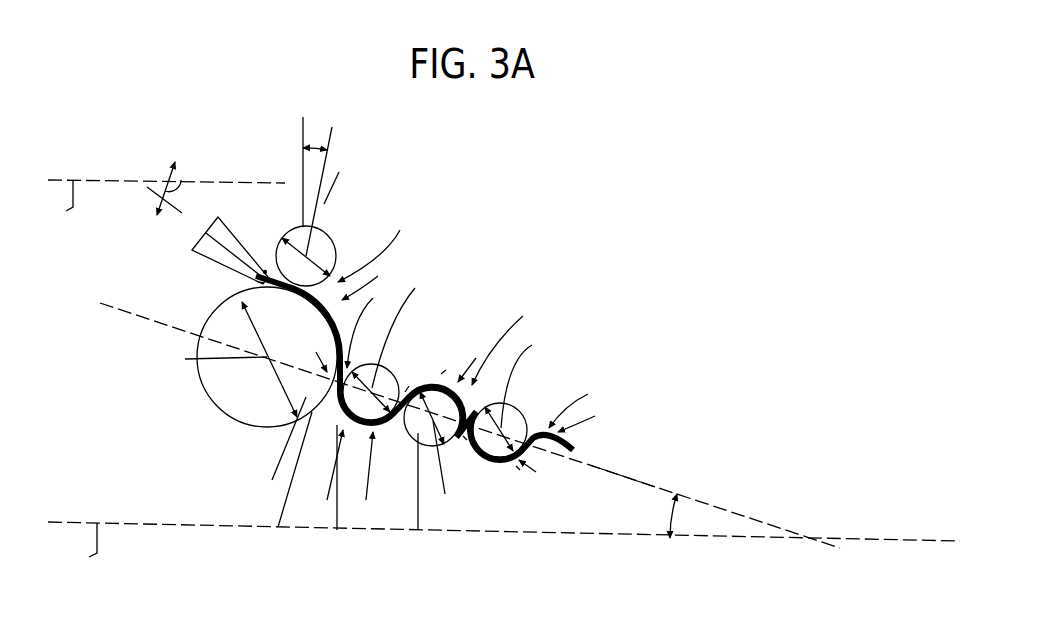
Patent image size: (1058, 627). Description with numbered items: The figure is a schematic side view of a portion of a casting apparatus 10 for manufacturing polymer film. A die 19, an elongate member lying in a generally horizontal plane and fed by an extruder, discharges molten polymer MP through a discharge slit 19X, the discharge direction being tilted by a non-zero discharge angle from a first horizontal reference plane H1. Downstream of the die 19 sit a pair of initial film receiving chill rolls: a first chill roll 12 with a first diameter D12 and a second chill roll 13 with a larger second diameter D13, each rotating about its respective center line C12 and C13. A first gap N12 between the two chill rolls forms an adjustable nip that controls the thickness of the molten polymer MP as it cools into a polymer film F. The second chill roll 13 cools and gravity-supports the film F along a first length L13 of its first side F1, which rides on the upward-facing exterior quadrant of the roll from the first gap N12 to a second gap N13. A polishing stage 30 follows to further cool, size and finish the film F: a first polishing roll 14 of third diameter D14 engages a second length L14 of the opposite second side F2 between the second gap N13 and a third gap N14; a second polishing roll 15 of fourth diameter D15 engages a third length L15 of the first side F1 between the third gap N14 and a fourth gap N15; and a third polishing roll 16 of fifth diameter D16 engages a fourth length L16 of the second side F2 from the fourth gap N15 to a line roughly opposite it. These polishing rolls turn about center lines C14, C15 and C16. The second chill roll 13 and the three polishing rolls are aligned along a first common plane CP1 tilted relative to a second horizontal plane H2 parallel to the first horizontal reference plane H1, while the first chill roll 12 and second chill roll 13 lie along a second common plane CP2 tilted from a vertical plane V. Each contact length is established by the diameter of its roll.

The casting apparatus 10 is at (553, 218).
The first chill roll 12 is at (331, 238).
The second chill roll 13 is at (217, 397).
The first polishing roll 14 is at (379, 366).
The second polishing roll 15 is at (420, 442).
The third polishing roll 16 is at (509, 404).
The die 19 is at (193, 246).
The discharge slit 19X is at (258, 282).
The polishing stage 30 is at (415, 496).
The center line of first chill roll C12 is at (310, 257).
The center line of second chill roll C13 is at (208, 357).
The center line of first polishing roll C14 is at (407, 326).
The center line of second polishing roll C15 is at (448, 468).
The center line of third polishing roll C16 is at (531, 375).
The first diameter D12 is at (300, 213).
The second diameter D13 is at (290, 421).
The third diameter D14 is at (389, 368).
The fourth diameter D15 is at (418, 437).
The fifth diameter D16 is at (520, 413).
The first gap N12 is at (307, 349).
The second gap N13 is at (281, 485).
The third gap N14 is at (409, 386).
The fourth gap N15 is at (467, 440).
The first length L13 is at (277, 454).
The second length L14 is at (345, 492).
The third length L15 is at (446, 370).
The fourth length L16 is at (520, 470).
The polymer film F is at (475, 343).
The first side of polymer film F1 is at (429, 398).
The second side of polymer film F2 is at (473, 363).
The molten polymer MP is at (265, 270).
The vertical plane V is at (300, 134).
The first horizontal reference plane H1 is at (164, 204).
The second horizontal plane H2 is at (504, 547).
The first common plane CP1 is at (632, 478).
The second common plane CP2 is at (338, 173).